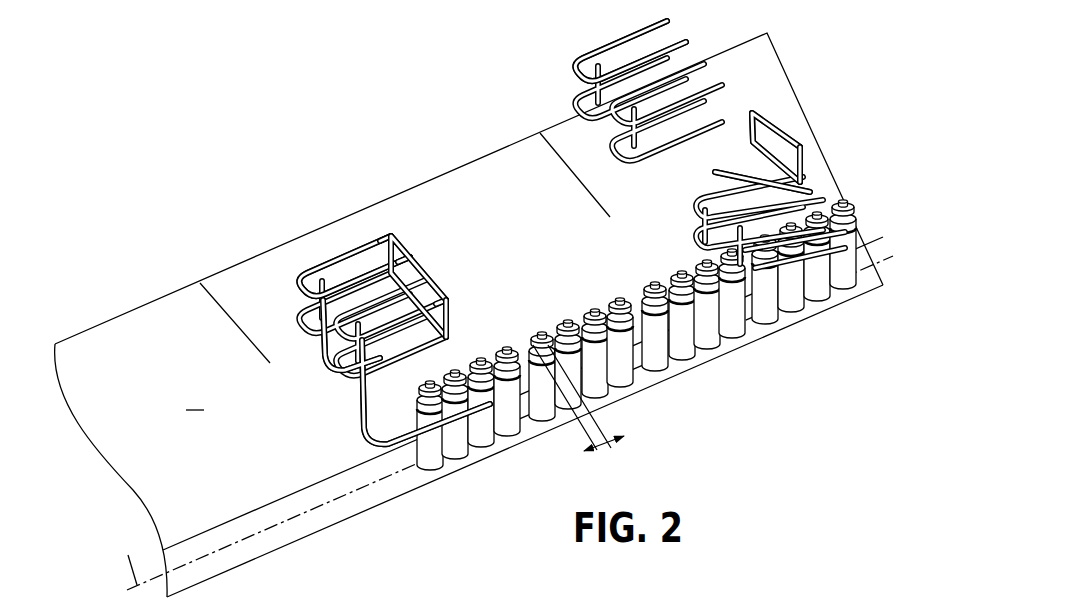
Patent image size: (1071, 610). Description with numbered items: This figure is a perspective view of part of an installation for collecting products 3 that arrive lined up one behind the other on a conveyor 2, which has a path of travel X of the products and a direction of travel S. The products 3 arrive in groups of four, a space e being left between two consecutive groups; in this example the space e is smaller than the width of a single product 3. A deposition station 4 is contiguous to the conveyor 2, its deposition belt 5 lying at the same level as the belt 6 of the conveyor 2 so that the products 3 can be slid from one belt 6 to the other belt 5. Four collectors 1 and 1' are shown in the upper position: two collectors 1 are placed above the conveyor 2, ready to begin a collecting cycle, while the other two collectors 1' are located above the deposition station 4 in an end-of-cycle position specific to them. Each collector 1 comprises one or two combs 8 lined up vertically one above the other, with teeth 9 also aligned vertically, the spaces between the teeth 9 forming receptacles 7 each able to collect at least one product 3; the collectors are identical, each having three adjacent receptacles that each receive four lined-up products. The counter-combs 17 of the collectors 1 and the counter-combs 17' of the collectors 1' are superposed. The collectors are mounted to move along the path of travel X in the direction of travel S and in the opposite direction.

The collector 1 is at (641, 325).
The collector 1' is at (507, 230).
The conveyor 2 is at (271, 535).
The product 3 is at (503, 427).
The deposition station 4 is at (228, 297).
The deposition belt 5 is at (195, 398).
The belt 6 is at (377, 494).
The receptacle 7 is at (355, 262).
The comb 8 is at (302, 263).
The tooth 9 is at (408, 261).
The counter-comb 17 is at (619, 198).
The counter-comb 17' is at (659, 217).
The space e is at (590, 398).
The direction of travel S is at (722, 432).
The path of travel X is at (506, 423).